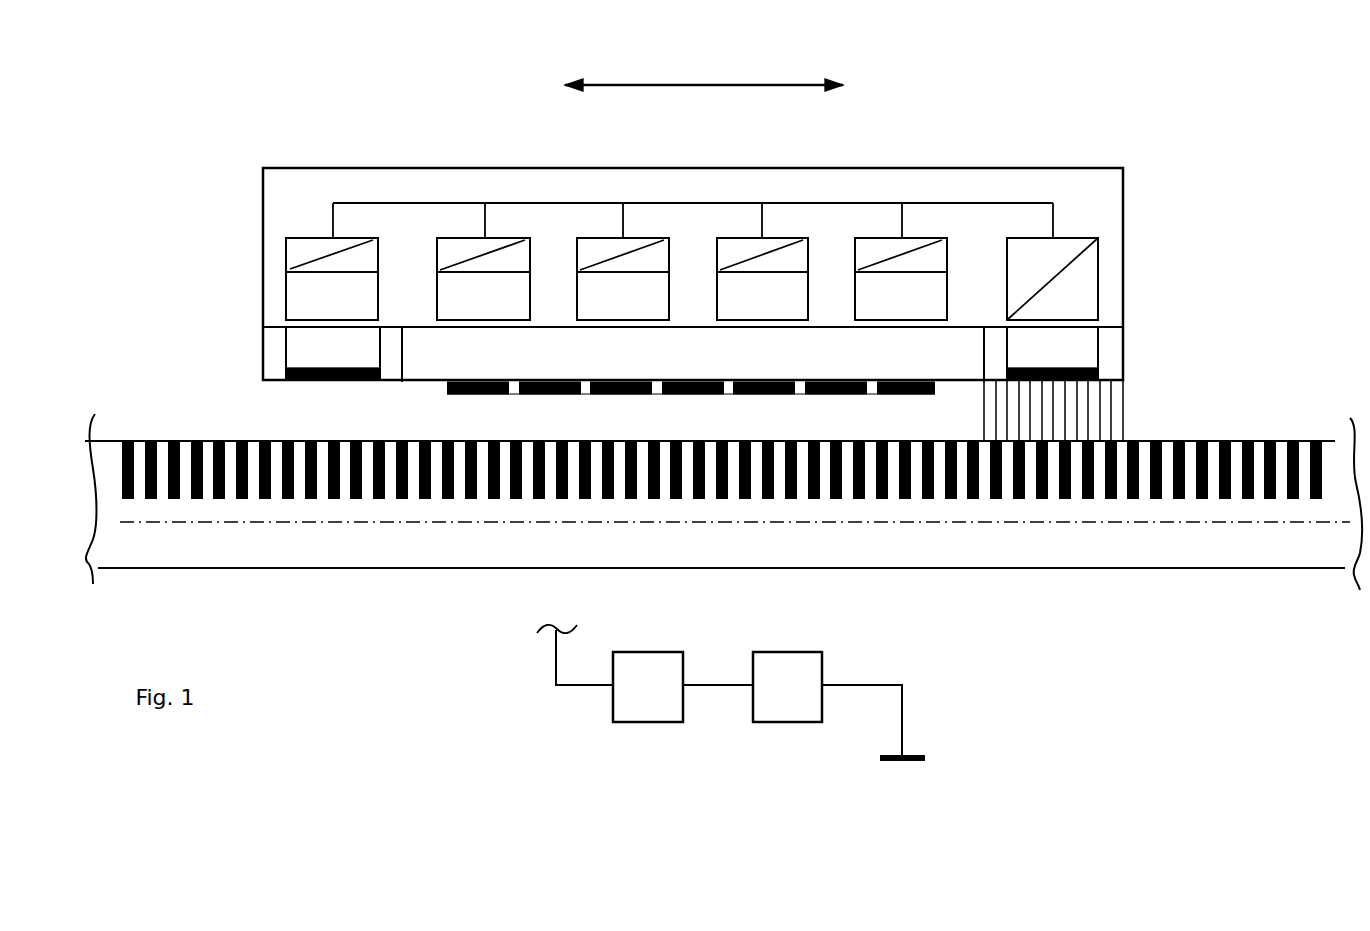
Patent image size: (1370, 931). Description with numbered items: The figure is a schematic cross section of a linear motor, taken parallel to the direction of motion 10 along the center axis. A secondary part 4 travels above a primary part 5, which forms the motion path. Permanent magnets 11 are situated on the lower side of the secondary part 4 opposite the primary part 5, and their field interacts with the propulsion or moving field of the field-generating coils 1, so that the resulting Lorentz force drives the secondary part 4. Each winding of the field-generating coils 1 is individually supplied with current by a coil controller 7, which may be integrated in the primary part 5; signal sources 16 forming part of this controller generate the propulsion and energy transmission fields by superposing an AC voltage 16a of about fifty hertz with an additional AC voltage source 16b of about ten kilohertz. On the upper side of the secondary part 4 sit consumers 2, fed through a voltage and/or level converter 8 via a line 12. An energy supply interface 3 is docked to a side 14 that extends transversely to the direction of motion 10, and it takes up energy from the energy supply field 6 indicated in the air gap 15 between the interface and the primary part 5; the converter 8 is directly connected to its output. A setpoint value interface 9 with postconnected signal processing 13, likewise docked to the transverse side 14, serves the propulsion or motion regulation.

The field-generating coils 1 is at (237, 473).
The consumers 2 is at (818, 297).
The energy supply interface 3 is at (893, 353).
The secondary part 4 is at (1010, 160).
The primary part 5 is at (1217, 430).
The energy supply field 6 is at (1055, 407).
The coil controller 7 is at (1065, 545).
The voltage and/or level converter 8 is at (858, 262).
The setpoint value interface 9 is at (333, 353).
The direction of motion 10 is at (704, 72).
The permanent magnets 11 is at (546, 382).
The line 12 is at (1066, 204).
The signal processing 13 is at (332, 279).
The side 14 is at (984, 357).
The air gap 15 is at (691, 412).
The signal sources 16 is at (734, 686).
The AC voltage 16a is at (648, 668).
The additional AC voltage source 16b is at (787, 668).